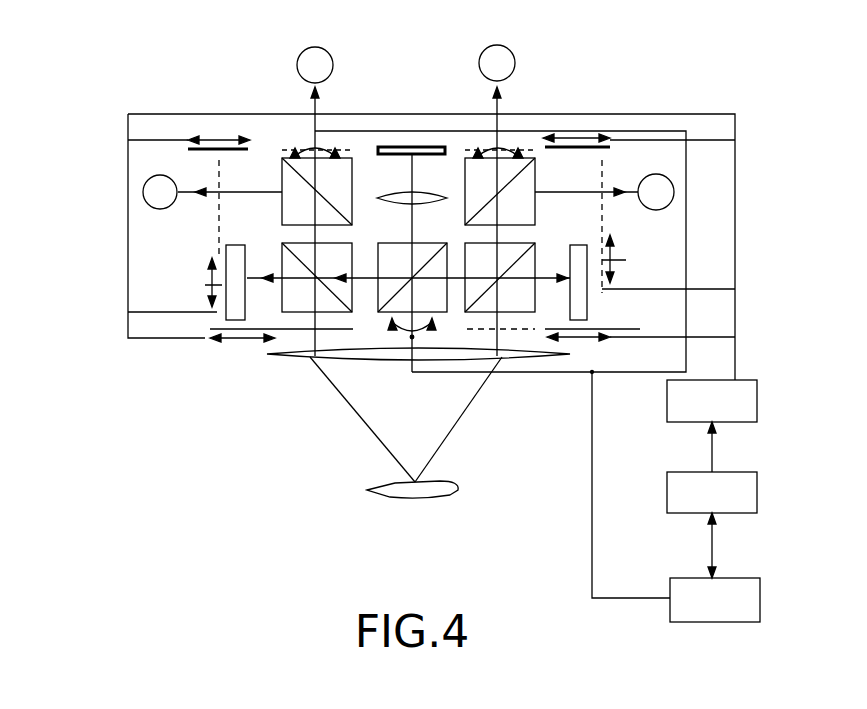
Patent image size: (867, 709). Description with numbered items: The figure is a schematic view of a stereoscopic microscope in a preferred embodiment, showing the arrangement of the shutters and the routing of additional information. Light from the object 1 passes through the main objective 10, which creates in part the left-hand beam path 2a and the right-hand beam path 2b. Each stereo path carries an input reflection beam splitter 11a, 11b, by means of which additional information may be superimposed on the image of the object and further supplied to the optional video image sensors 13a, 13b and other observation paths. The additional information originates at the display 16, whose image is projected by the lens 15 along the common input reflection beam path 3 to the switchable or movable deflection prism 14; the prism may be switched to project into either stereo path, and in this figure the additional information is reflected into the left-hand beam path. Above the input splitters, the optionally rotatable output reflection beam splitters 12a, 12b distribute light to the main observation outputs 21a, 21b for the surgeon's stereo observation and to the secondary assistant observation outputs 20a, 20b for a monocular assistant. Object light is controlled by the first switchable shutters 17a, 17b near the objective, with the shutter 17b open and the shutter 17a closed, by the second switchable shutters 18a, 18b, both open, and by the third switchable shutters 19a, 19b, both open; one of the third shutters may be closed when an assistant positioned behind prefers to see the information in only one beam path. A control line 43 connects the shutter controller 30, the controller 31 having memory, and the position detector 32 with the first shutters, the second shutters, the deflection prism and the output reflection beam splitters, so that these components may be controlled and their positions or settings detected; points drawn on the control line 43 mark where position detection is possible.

The object 1 is at (457, 483).
The left-hand beam path 2a is at (375, 437).
The right-hand beam path 2b is at (462, 421).
The input reflection beam path 3 is at (415, 227).
The main objective 10 is at (302, 362).
The input reflection beam splitter 11a is at (280, 262).
The input reflection beam splitter 11b is at (535, 252).
The output reflection beam splitter 12a is at (294, 152).
The output reflection beam splitter 12b is at (466, 152).
The video image sensor 13a is at (226, 318).
The video image sensor 13b is at (587, 308).
The deflection prism 14 is at (440, 318).
The lens 15 is at (380, 196).
The display 16 is at (425, 146).
The first switchable shutter 17a is at (255, 340).
The first switchable shutter 17b is at (590, 340).
The second switchable shutter 18a is at (225, 147).
The second switchable shutter 18b is at (592, 147).
The third switchable shutter 19a is at (205, 285).
The third switchable shutter 19b is at (626, 260).
The secondary observation output 20a is at (143, 192).
The secondary observation output 20b is at (674, 192).
The main observation output 21a is at (297, 66).
The main observation output 21b is at (515, 63).
The shutter controller 30 is at (699, 413).
The controller 31 is at (699, 505).
The position detector 32 is at (702, 612).
The control line 43 is at (128, 268).